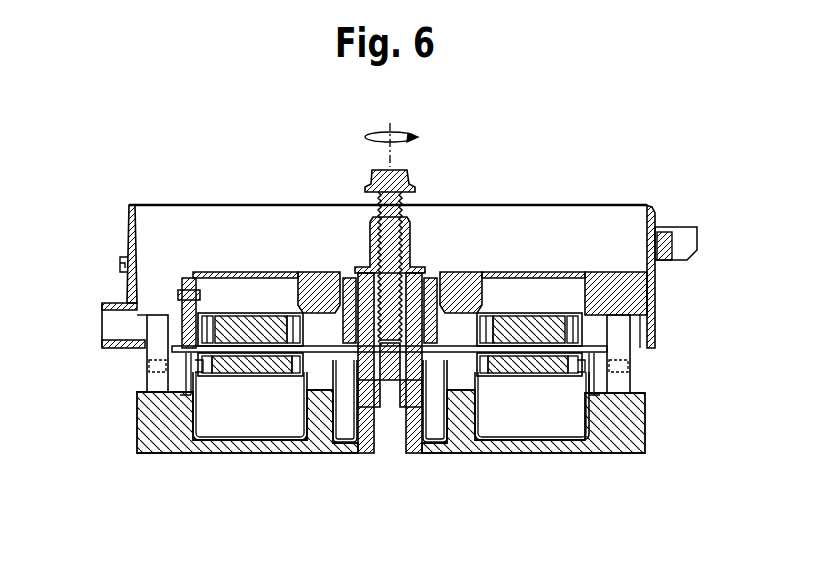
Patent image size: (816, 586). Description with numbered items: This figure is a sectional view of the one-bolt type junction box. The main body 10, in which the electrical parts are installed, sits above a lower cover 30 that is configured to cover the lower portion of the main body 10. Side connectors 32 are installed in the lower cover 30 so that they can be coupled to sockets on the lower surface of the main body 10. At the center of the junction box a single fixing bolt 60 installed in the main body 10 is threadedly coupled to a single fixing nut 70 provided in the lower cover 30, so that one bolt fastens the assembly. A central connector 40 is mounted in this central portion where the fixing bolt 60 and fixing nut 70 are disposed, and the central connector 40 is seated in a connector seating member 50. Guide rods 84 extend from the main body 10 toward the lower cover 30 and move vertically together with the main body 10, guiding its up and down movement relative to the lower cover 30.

The main body 10 is at (129, 228).
The lower cover 30 is at (538, 473).
The side connector 32 is at (228, 313).
The central connector 40 is at (345, 277).
The connector seating member 50 is at (343, 440).
The fixing bolt 60 is at (410, 185).
The fixing nut 70 is at (430, 275).
The guide rod 84 is at (163, 350).